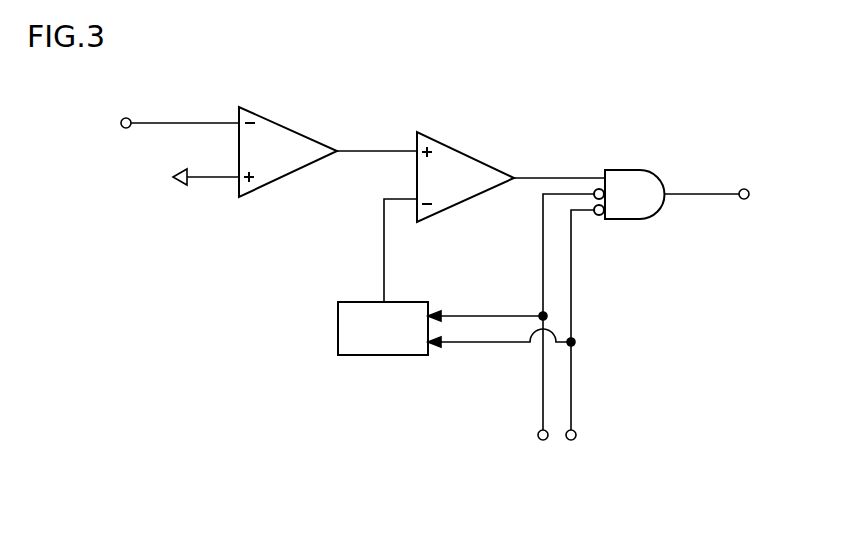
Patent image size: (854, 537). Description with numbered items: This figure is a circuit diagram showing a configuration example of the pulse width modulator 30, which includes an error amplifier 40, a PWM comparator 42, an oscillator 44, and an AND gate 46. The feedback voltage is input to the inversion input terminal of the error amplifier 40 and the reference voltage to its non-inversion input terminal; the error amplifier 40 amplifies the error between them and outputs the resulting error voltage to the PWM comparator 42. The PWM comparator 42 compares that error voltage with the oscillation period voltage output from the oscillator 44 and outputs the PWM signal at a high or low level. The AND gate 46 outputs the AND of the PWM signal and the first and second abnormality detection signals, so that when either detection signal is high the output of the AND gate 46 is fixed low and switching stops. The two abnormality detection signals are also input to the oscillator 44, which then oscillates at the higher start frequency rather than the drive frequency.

The pulse width modulator 30 is at (474, 504).
The error amplifier 40 is at (290, 125).
The PWM comparator 42 is at (467, 153).
The oscillator 44 is at (338, 327).
The AND gate 46 is at (638, 170).